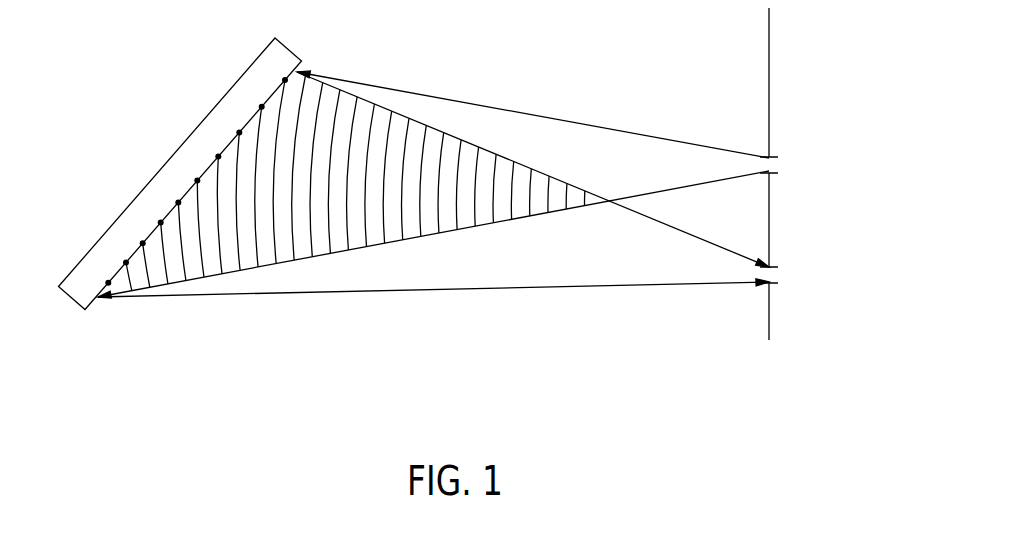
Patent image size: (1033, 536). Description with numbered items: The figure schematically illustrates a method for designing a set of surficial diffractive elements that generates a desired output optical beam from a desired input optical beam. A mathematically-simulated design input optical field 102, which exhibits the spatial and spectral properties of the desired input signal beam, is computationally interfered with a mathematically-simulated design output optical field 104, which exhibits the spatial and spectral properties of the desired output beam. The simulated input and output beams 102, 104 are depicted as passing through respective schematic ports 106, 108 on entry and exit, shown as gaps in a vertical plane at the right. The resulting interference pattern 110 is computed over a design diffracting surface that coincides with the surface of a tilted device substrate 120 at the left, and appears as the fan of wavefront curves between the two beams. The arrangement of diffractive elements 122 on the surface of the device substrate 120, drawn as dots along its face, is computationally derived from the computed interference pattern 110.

The design input optical field 102 is at (572, 122).
The design output optical field 104 is at (562, 287).
The schematic port 106 is at (775, 165).
The schematic port 108 is at (773, 274).
The interference pattern 110 is at (420, 177).
The device substrate 120 is at (256, 88).
The diffractive elements 122 is at (261, 107).